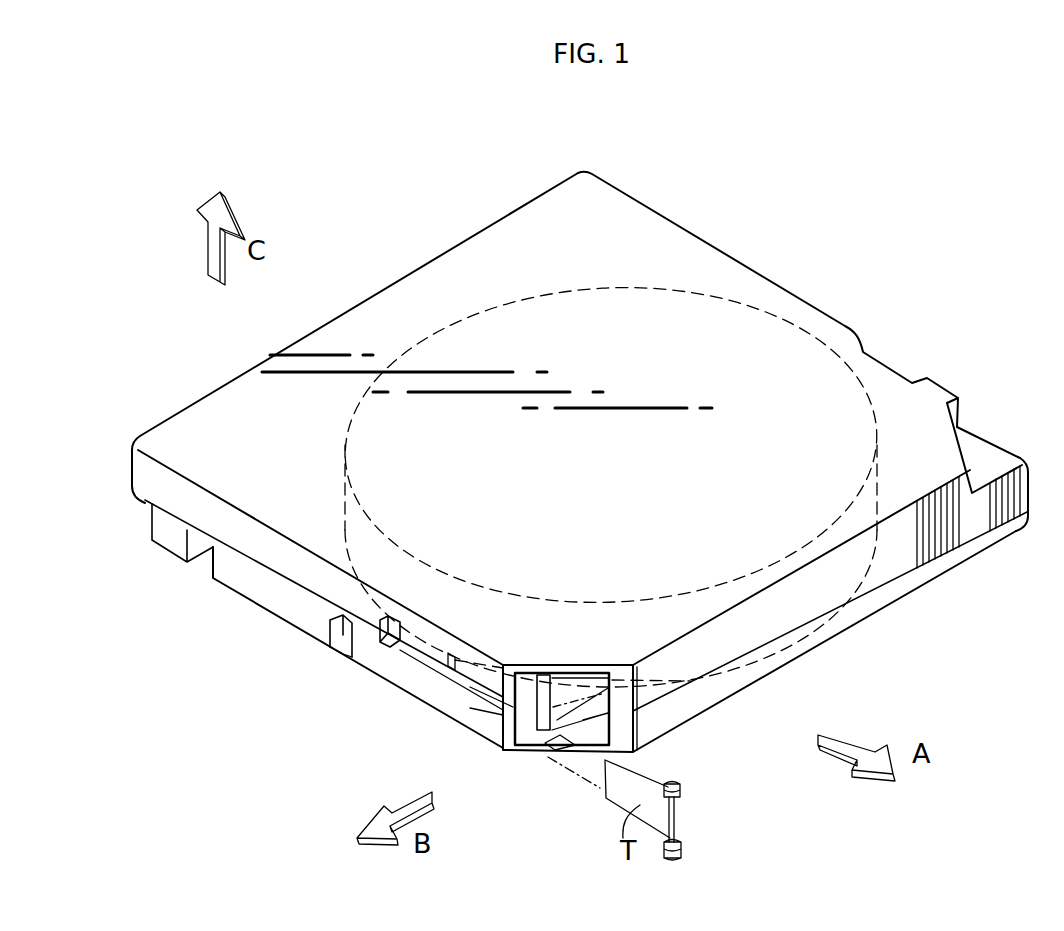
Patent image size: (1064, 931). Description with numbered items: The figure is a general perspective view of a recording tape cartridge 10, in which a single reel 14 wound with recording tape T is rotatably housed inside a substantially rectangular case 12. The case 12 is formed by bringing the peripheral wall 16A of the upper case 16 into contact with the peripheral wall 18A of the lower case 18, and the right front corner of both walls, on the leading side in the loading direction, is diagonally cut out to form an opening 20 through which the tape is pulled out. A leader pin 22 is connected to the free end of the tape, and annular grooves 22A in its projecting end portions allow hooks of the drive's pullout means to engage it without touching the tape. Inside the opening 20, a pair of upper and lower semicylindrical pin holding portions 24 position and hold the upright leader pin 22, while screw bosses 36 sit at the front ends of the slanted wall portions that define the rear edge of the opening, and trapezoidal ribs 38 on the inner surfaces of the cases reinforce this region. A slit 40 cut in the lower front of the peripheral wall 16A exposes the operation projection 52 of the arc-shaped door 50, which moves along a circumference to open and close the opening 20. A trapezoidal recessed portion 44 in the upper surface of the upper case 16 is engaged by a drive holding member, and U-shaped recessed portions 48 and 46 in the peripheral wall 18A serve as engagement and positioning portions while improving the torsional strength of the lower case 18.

The recording tape cartridge 10 is at (880, 250).
The case 12 is at (637, 197).
The reel 14 is at (637, 385).
The upper case 16 is at (842, 585).
The peripheral wall of the upper case 16A is at (150, 473).
The lower case 18 is at (813, 635).
The peripheral wall of the lower case 18A is at (263, 590).
The opening 20 is at (523, 747).
The leader pin 22 is at (678, 780).
The annular grooves 22A is at (686, 854).
The pin holding portions 24 is at (600, 712).
The screw bosses 36 is at (493, 743).
The ribs 38 is at (528, 745).
The slit 40 is at (423, 657).
The recessed portion 44 is at (892, 372).
The recessed portion 46 is at (200, 563).
The recessed portion 48 is at (340, 633).
The door 50 is at (383, 642).
The operation projection 52 is at (352, 667).